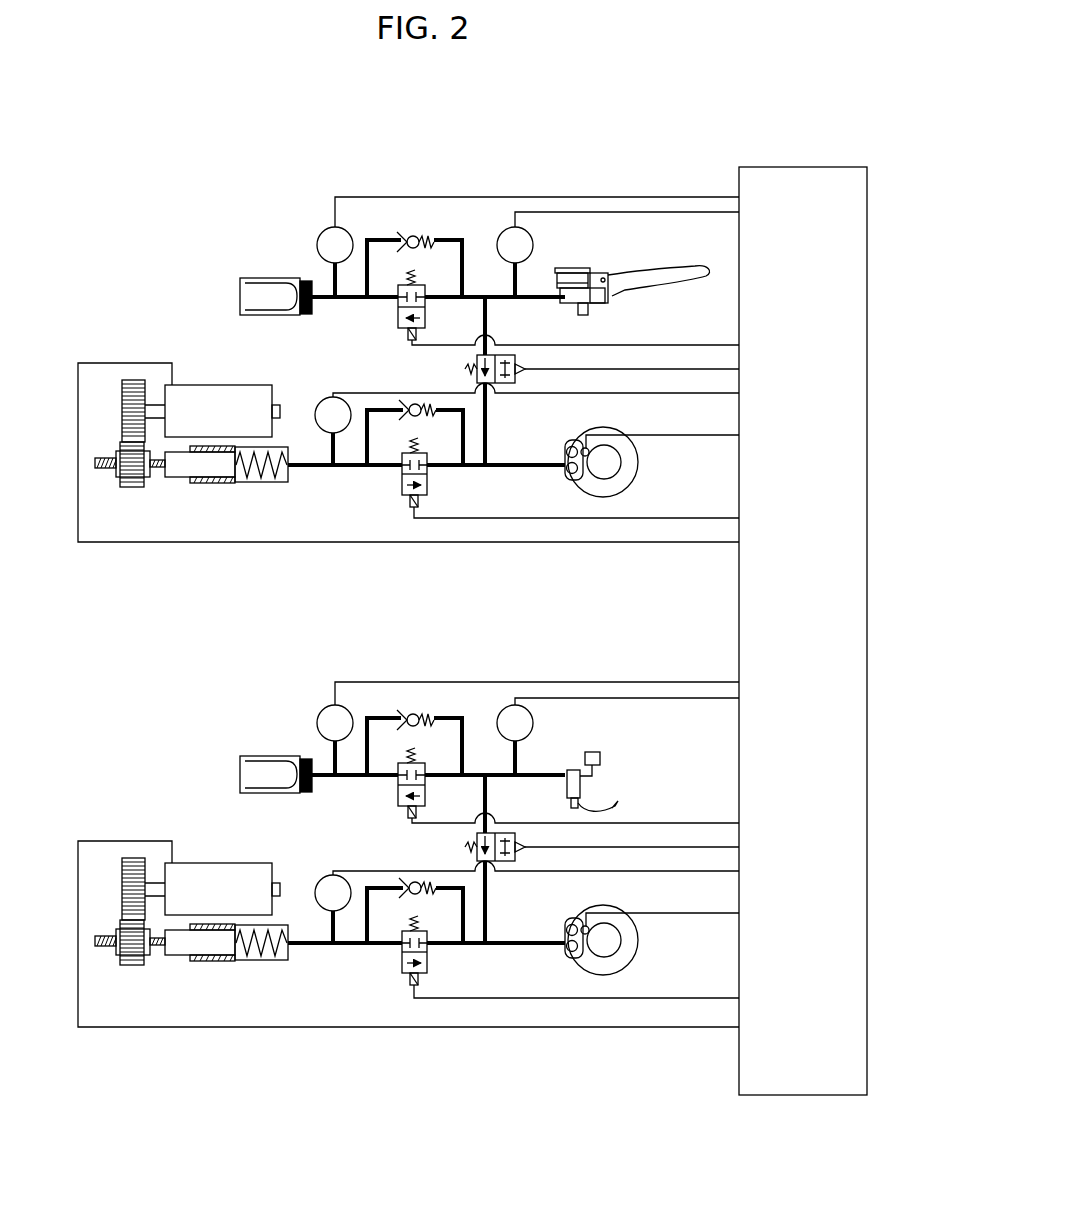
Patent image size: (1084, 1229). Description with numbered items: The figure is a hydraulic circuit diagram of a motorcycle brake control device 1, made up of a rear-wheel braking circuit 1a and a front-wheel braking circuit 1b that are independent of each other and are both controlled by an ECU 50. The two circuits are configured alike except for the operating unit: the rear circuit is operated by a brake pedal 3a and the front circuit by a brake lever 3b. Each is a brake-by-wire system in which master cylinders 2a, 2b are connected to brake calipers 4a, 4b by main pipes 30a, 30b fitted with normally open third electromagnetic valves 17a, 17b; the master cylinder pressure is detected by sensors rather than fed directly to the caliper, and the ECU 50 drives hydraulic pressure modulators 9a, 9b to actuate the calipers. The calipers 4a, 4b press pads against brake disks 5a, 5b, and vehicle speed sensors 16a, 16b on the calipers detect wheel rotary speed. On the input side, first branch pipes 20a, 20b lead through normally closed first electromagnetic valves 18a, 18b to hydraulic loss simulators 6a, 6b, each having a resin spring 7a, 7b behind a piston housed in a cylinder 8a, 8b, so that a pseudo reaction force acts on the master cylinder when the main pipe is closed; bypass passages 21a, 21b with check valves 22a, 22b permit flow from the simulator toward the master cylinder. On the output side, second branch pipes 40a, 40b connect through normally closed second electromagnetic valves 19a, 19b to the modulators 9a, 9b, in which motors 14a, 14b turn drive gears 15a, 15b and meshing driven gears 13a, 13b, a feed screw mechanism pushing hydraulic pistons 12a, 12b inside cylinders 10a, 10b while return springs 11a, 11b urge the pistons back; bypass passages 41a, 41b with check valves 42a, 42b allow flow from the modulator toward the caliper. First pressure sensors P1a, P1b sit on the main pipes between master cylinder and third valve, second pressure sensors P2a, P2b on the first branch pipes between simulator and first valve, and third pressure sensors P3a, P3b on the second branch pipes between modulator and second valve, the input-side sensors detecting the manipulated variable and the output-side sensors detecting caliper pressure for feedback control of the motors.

The brake control device 1 is at (622, 98).
The rear-wheel braking circuit 1a is at (408, 804).
The front-wheel braking circuit 1b is at (489, 163).
The master cylinder 2a is at (559, 780).
The master cylinder 2b is at (572, 305).
The brake pedal 3a is at (613, 780).
The brake lever 3b is at (662, 284).
The brake caliper 4a is at (552, 928).
The brake caliper 4b is at (566, 448).
The brake disk 5a is at (613, 945).
The brake disk 5b is at (618, 480).
The hydraulic loss simulator 6a is at (248, 758).
The hydraulic loss simulator 6b is at (238, 290).
The resin spring 7a is at (271, 741).
The resin spring 7b is at (258, 287).
The cylinder 8a is at (299, 747).
The cylinder 8b is at (292, 279).
The hydraulic pressure modulator 9a is at (219, 973).
The hydraulic pressure modulator 9b is at (238, 485).
The cylinder 10a is at (200, 969).
The cylinder 10b is at (205, 483).
The return spring 11a is at (263, 966).
The return spring 11b is at (268, 483).
The hydraulic piston 12a is at (140, 972).
The hydraulic piston 12b is at (172, 478).
The driven gear 13a is at (130, 968).
The driven gear 13b is at (132, 488).
The motor 14a is at (212, 870).
The motor 14b is at (200, 400).
The drive gear 15a is at (133, 864).
The drive gear 15b is at (137, 388).
The vehicle speed sensor 16a is at (660, 927).
The vehicle speed sensor 16b is at (590, 452).
The third electromagnetic valve 17a is at (602, 831).
The third electromagnetic valve 17b is at (504, 353).
The first electromagnetic valve 18a is at (542, 790).
The first electromagnetic valve 18b is at (396, 316).
The second electromagnetic valve 19a is at (543, 959).
The second electromagnetic valve 19b is at (398, 486).
The first branch pipe 20a is at (430, 799).
The first branch pipe 20b is at (342, 300).
The bypass passage 21a is at (391, 704).
The bypass passage 21b is at (375, 238).
The check valve 22a is at (415, 683).
The check valve 22b is at (404, 232).
The main pipe 30a is at (518, 859).
The main pipe 30b is at (492, 420).
The second branch pipe 40a is at (426, 972).
The second branch pipe 40b is at (346, 468).
The bypass passage 41a is at (391, 892).
The bypass passage 41b is at (368, 408).
The check valve 42a is at (408, 869).
The check valve 42b is at (405, 403).
The ECU 50 is at (790, 1096).
The first pressure sensor P1a is at (618, 736).
The first pressure sensor P1b is at (534, 243).
The second pressure sensor P2a is at (481, 714).
The second pressure sensor P2b is at (328, 229).
The third pressure sensor P3a is at (503, 893).
The third pressure sensor P3b is at (500, 412).